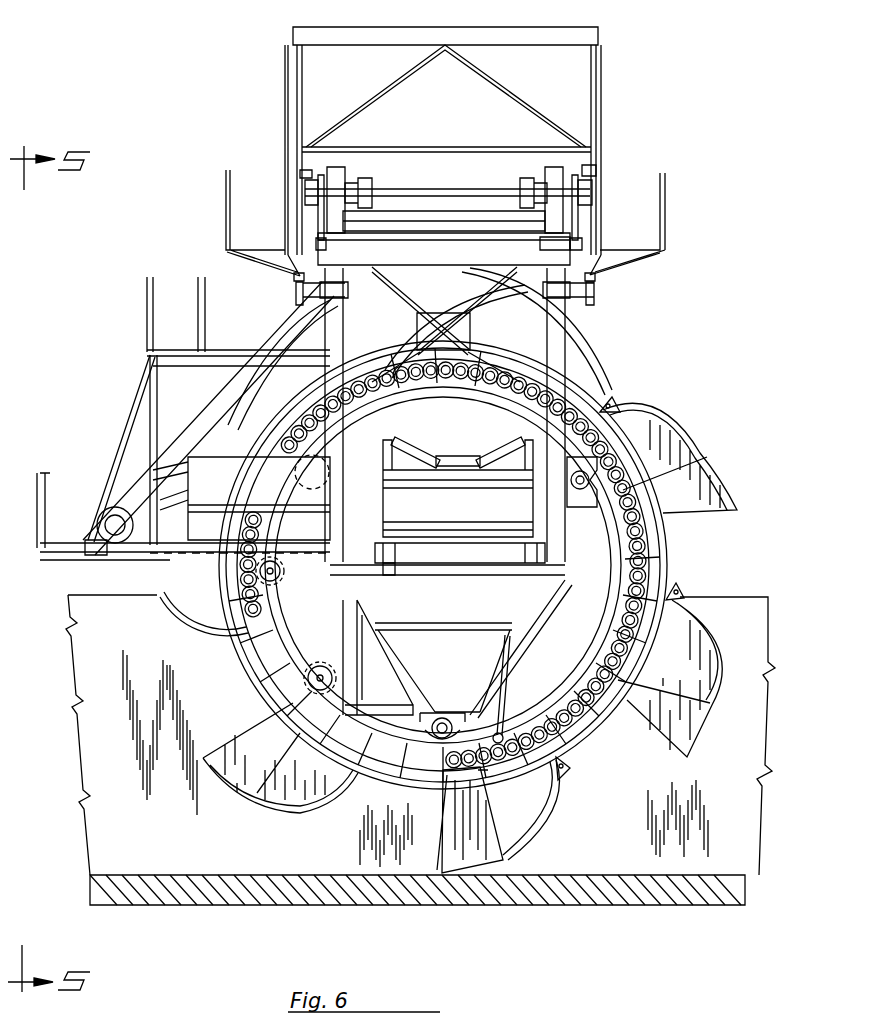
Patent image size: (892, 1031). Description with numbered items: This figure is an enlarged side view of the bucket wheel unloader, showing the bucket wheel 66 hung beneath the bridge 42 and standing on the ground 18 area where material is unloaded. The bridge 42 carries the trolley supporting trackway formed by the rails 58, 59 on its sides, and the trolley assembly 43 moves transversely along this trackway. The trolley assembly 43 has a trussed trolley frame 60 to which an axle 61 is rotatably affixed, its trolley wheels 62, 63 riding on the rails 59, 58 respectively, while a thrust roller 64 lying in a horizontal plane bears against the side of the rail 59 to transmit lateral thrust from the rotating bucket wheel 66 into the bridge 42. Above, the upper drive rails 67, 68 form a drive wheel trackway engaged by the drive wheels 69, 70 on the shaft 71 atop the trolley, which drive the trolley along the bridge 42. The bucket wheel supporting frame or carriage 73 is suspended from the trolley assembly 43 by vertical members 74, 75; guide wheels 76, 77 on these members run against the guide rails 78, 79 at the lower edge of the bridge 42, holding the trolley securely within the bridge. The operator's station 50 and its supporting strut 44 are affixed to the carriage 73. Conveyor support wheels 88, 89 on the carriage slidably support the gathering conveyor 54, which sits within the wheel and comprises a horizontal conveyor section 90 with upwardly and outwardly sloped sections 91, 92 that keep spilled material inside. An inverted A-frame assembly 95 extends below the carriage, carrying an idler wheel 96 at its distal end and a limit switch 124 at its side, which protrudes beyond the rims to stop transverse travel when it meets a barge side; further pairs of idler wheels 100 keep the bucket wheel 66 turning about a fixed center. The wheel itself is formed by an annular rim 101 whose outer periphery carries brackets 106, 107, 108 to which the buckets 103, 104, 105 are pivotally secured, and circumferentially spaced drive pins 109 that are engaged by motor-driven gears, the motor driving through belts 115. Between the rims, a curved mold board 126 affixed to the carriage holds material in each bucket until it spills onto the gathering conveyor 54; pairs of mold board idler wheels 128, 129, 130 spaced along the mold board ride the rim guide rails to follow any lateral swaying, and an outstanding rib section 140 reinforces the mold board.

The ground 18 is at (578, 897).
The bridge 42 is at (614, 106).
The trolley assembly 43 is at (443, 278).
The diagonal strut 44 is at (118, 424).
The operator's station 50 is at (172, 398).
The gathering conveyor 54 is at (444, 512).
The rail 58 is at (318, 245).
The rail 59 is at (585, 232).
The trolley frame 60 is at (444, 249).
The axle 61 is at (432, 188).
The trolley wheel 62 is at (576, 205).
The trolley wheel 63 is at (318, 210).
The thrust roller 64 is at (541, 249).
The bucket wheel 66 is at (592, 378).
The upper drive rail 67 is at (589, 165).
The upper drive rail 68 is at (300, 173).
The drive wheel 69 is at (585, 183).
The drive wheel 70 is at (305, 186).
The shaft 71 is at (470, 186).
The bucket wheel supporting frame 73 is at (458, 587).
The vertical supporting member 74 is at (567, 347).
The vertical supporting member 75 is at (344, 331).
The guide wheel 76 is at (594, 298).
The guide wheel 77 is at (296, 298).
The guide rail 78 is at (595, 281).
The guide rail 79 is at (294, 284).
The conveyor support wheel 88 is at (520, 565).
The conveyor support wheel 89 is at (388, 577).
The horizontal conveyor section 90 is at (456, 455).
The sloped conveyor section 91 is at (490, 434).
The sloped conveyor section 92 is at (410, 434).
The inverted A-frame assembly 95 is at (515, 642).
The idler wheel 96 is at (436, 713).
The idler wheels 100 is at (582, 498).
The annular rim 101 is at (662, 569).
The bucket 103 is at (660, 417).
The bucket 104 is at (690, 655).
The bucket 105 is at (538, 832).
The bracket 106 is at (614, 400).
The bracket 107 is at (680, 592).
The bracket 108 is at (566, 772).
The drive pin 109 is at (553, 748).
The belts 115 is at (210, 550).
The limit switch 124 is at (500, 720).
The mold board 126 is at (273, 633).
The mold board idler wheels 128 is at (310, 670).
The mold board idler wheels 129 is at (283, 578).
The mold board idler wheels 130 is at (259, 497).
The rib section 140 is at (290, 652).